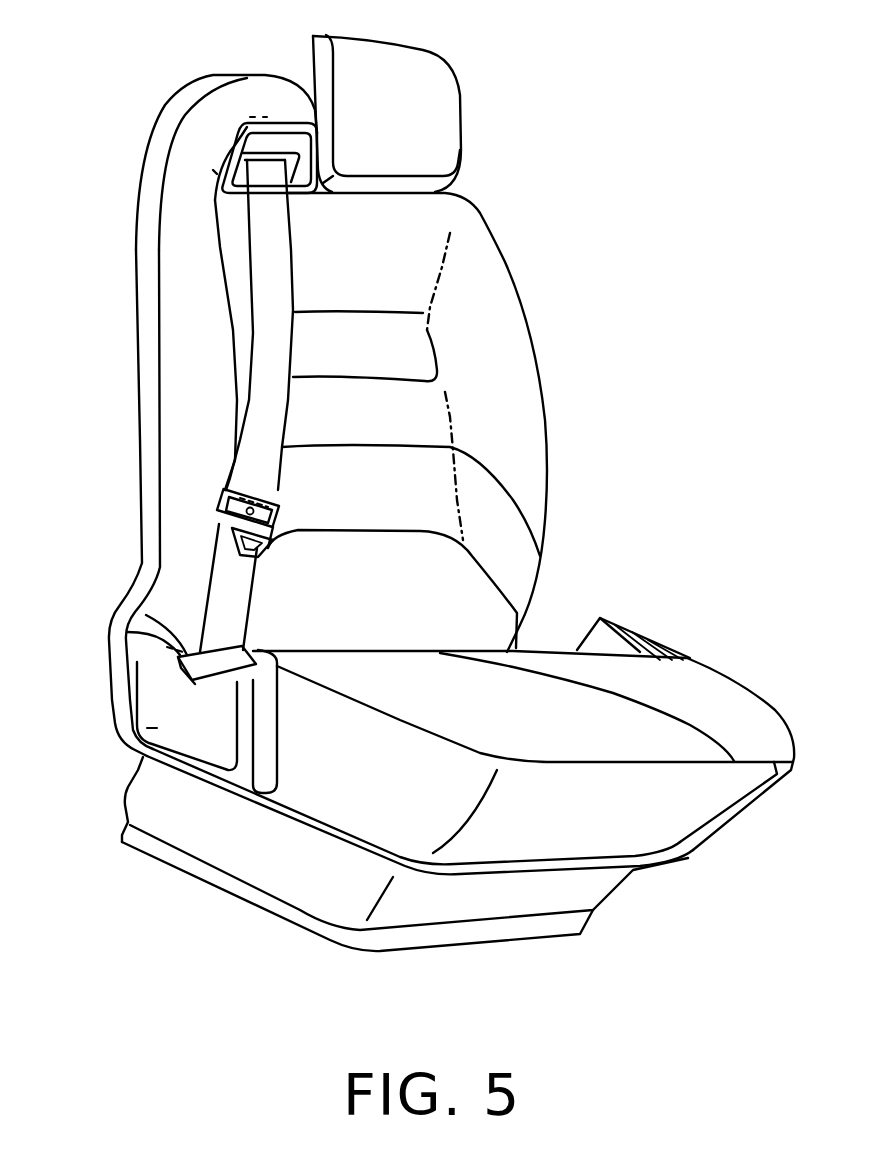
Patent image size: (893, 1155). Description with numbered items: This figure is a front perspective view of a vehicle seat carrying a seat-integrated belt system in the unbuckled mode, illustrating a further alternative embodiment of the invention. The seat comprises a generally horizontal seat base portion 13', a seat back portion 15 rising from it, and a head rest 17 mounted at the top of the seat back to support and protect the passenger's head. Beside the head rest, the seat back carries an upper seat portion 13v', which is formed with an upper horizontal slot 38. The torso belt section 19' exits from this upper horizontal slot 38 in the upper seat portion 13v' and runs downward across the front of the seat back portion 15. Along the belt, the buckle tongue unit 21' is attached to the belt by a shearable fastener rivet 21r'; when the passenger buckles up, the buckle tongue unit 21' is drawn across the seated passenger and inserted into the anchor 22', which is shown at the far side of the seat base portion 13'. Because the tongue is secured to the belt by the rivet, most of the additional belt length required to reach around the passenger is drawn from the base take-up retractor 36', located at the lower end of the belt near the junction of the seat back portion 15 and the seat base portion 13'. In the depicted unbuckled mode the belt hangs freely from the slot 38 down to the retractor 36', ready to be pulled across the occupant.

The upper seat portion 13v' is at (213, 383).
The upper horizontal slot 38 is at (262, 150).
The head rest 17 is at (408, 132).
The seat back portion 15 is at (393, 281).
The belt section 19' is at (170, 406).
The shearable fastener rivet 21r' is at (161, 509).
The buckle tongue unit 21' is at (145, 670).
The base take-up retractor 36' is at (206, 683).
The anchor 22' is at (673, 622).
The seat base portion 13' is at (458, 800).